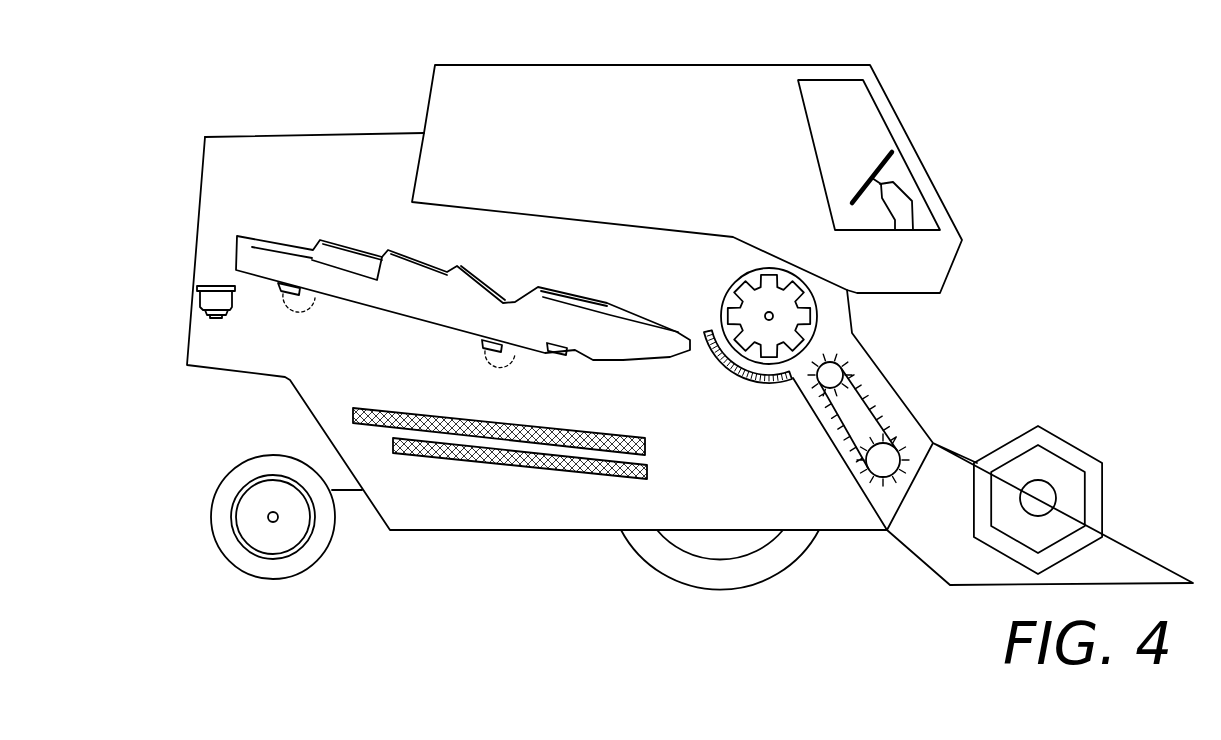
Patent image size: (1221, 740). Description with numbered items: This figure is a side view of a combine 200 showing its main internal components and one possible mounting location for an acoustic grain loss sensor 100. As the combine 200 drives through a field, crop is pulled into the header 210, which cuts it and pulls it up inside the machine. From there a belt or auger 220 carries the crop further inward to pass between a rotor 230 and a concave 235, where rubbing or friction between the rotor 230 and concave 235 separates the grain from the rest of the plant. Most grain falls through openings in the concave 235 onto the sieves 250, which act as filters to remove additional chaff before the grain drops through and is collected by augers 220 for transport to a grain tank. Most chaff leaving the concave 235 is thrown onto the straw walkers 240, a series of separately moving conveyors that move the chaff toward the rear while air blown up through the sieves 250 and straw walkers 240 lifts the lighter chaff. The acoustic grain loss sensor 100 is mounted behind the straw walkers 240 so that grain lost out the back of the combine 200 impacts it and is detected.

The acoustic grain loss sensor 100 is at (213, 278).
The combine 200 is at (648, 57).
The header 210 is at (1130, 545).
The belt or auger 220 is at (883, 410).
The rotor 230 is at (802, 328).
The concave 235 is at (708, 358).
The straw walkers 240 is at (321, 241).
The sieves 250 is at (493, 462).